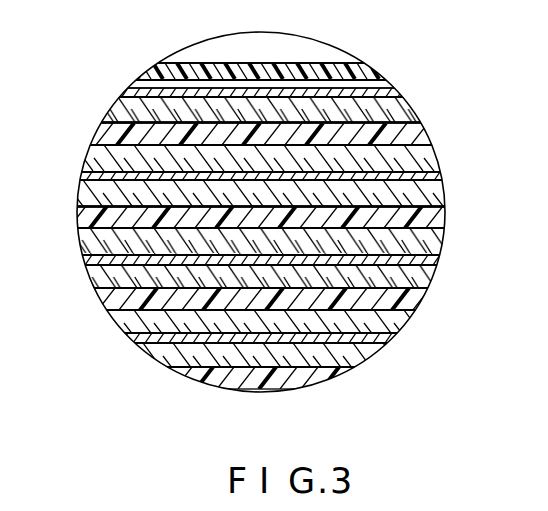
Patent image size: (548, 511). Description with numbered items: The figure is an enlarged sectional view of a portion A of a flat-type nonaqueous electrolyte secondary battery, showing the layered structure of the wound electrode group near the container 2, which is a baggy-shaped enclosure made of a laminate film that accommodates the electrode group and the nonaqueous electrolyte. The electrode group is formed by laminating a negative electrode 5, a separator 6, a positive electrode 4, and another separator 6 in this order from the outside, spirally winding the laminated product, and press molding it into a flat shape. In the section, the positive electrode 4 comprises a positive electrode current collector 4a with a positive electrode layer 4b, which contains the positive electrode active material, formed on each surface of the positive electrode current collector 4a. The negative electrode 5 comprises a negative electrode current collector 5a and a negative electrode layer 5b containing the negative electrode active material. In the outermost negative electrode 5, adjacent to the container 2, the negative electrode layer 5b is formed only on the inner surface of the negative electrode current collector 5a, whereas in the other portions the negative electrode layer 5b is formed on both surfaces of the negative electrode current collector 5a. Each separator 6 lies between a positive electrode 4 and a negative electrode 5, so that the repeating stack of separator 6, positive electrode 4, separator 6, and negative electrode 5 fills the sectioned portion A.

The portion A is at (177, 63).
The container 2 is at (368, 73).
The positive electrode 4 is at (274, 270).
The positive electrode current collector 4a is at (420, 177).
The positive electrode layer 4b is at (413, 163).
The negative electrode 5 is at (274, 185).
The negative electrode current collector 5a is at (393, 93).
The negative electrode layer 5b is at (396, 113).
The separator 6 is at (110, 134).